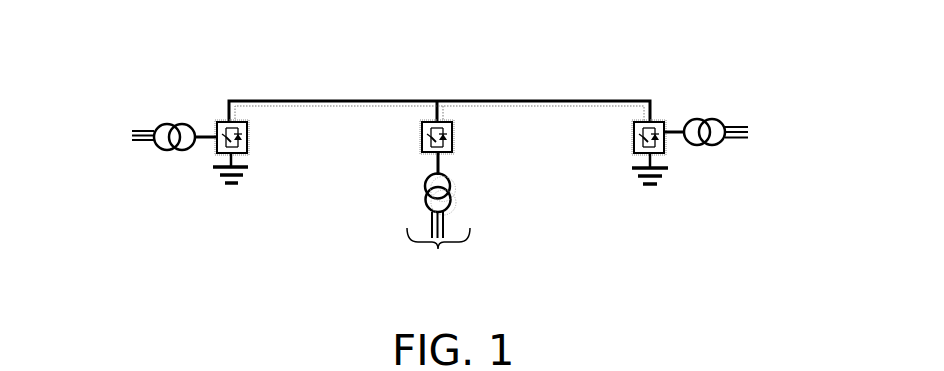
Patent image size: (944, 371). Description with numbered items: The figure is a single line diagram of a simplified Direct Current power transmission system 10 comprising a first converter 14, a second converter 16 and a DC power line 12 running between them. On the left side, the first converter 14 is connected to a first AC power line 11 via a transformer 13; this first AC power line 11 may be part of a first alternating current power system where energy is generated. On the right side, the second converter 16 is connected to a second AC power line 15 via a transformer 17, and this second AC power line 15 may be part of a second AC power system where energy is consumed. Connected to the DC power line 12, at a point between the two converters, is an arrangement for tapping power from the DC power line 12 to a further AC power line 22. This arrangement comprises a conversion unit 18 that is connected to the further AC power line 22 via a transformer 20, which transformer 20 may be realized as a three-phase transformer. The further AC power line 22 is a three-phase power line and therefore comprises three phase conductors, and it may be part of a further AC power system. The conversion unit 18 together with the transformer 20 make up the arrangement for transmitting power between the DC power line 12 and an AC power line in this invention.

The DC power transmission system 10 is at (480, 65).
The first AC power line 11 is at (137, 132).
The DC power line 12 is at (337, 100).
The transformer 13 is at (163, 152).
The first converter 14 is at (218, 132).
The second AC power line 15 is at (747, 125).
The second converter 16 is at (655, 123).
The transformer 17 is at (705, 148).
The conversion unit 18 is at (447, 133).
The transformer 20 is at (428, 190).
The further AC power line 22 is at (438, 251).